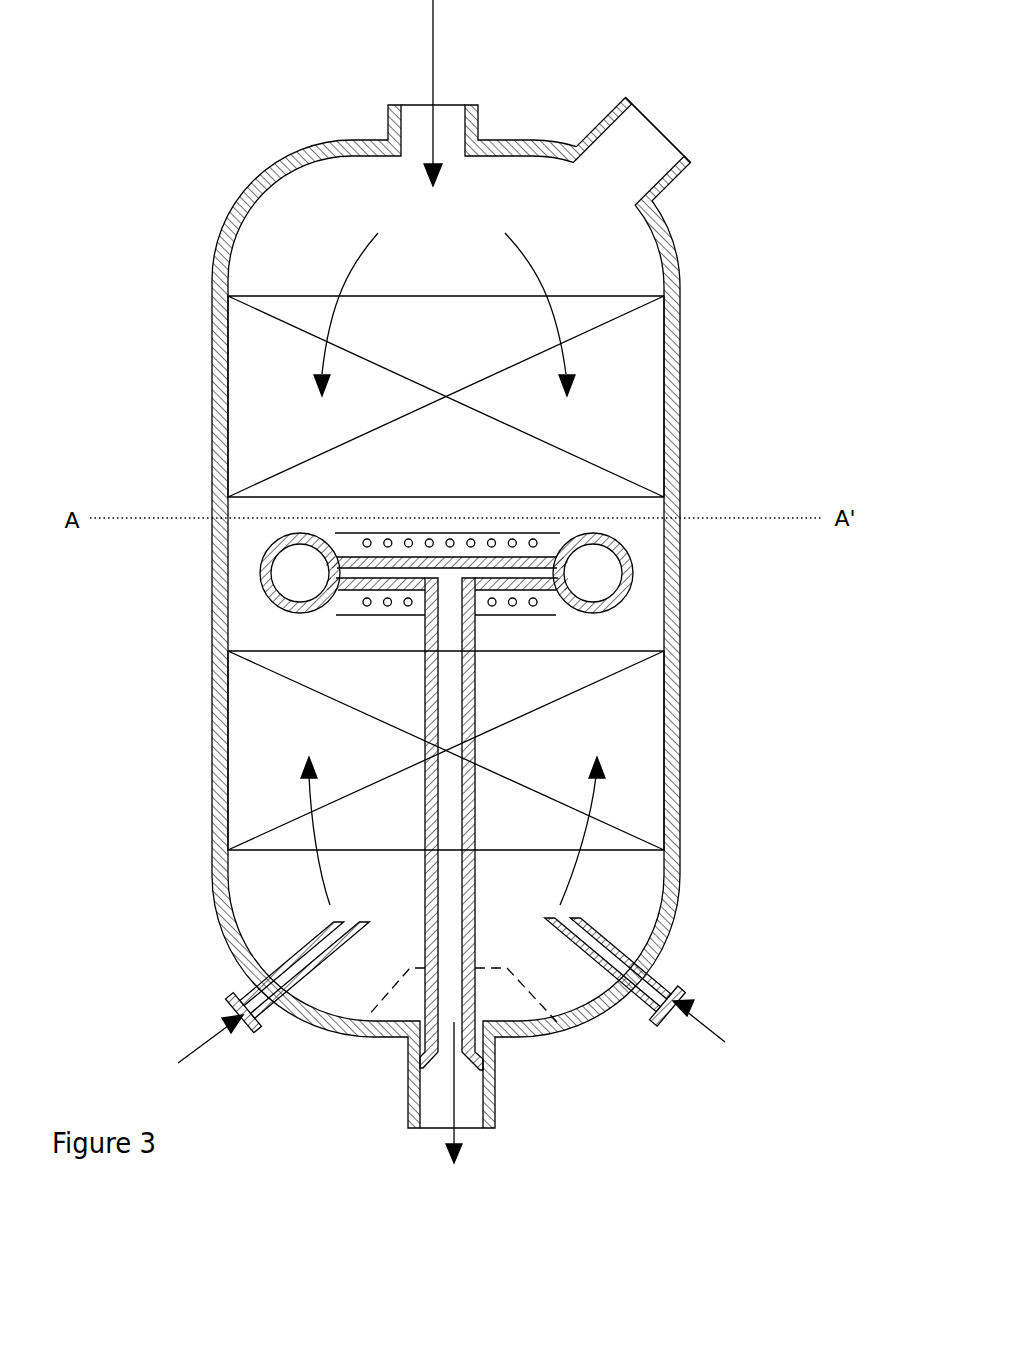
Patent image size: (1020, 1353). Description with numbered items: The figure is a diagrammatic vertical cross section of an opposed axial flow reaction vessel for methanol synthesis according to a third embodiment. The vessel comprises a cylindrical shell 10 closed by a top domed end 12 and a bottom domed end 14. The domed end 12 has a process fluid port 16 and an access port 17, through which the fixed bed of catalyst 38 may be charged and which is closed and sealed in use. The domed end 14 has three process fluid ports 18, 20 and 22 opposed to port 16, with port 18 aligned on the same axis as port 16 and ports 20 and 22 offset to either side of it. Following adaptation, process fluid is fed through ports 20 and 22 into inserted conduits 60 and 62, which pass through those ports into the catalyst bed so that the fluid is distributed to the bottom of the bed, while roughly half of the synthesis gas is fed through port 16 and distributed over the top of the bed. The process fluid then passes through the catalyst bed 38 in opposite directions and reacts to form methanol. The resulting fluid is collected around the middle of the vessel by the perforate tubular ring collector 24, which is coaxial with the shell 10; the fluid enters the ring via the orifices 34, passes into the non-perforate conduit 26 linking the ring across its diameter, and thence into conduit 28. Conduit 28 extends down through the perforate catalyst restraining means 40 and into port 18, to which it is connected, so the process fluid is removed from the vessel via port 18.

The cylindrical shell 10 is at (408, 613).
The domed end (top) 12 is at (245, 195).
The domed end (bottom) 14 is at (236, 990).
The process fluid port 16 is at (388, 116).
The access port 17 is at (673, 187).
The process fluid port 18 is at (410, 1072).
The process fluid port 20 is at (282, 1020).
The process fluid port 22 is at (671, 987).
The perforate tubular ring collector 24 is at (260, 572).
The non-perforate conduit 26 is at (297, 615).
The conduit 28 is at (400, 727).
The orifices 34 is at (620, 602).
The fixed bed of catalyst 38 is at (612, 402).
The perforate catalyst restraining means 40 is at (392, 995).
The inserted conduit 60 is at (312, 1018).
The inserted conduit 62 is at (623, 950).